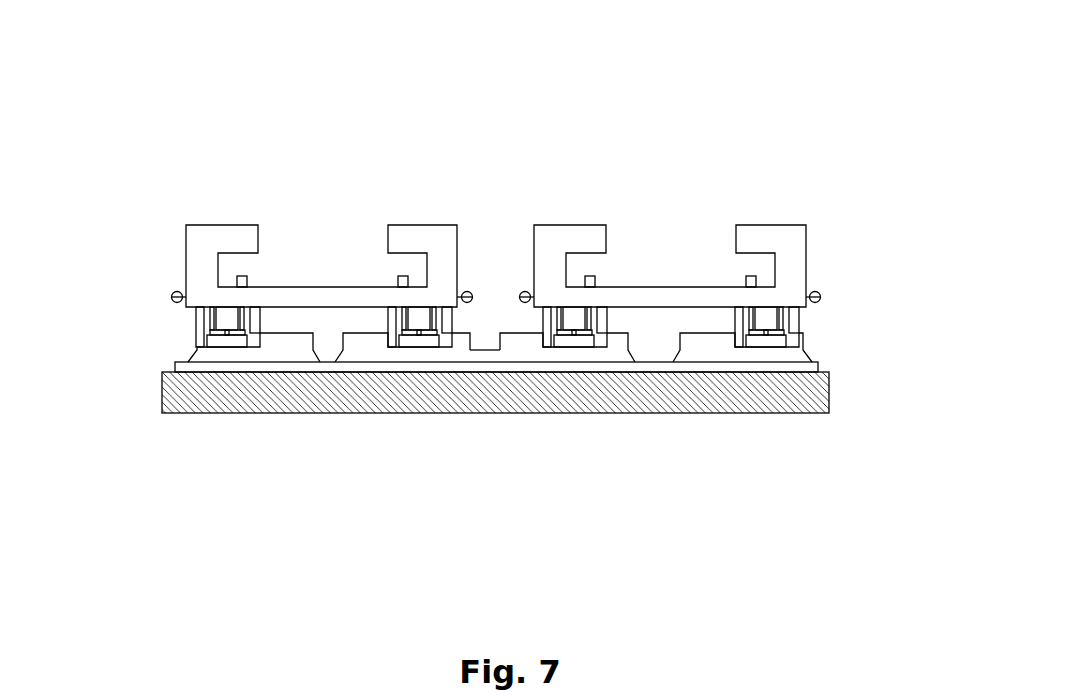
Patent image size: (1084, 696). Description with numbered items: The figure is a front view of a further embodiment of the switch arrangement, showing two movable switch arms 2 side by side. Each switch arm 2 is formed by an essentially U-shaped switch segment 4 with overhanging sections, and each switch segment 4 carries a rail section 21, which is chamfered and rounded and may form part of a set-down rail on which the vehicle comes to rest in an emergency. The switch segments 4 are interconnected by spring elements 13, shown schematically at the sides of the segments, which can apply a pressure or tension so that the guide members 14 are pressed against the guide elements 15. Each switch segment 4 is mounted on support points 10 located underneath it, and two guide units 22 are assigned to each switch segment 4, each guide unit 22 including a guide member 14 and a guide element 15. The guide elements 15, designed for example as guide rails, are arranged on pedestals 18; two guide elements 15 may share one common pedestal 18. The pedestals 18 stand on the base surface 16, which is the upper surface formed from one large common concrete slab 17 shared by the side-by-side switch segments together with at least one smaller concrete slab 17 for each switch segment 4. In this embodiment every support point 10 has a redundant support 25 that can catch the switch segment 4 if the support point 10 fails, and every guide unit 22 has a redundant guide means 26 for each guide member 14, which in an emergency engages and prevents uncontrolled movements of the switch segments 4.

The switch arm 2 is at (237, 192).
The switch segment 4 is at (553, 238).
The support point 10 is at (219, 291).
The spring element 13 is at (172, 290).
The guide member 14 is at (225, 342).
The guide element 15 is at (457, 340).
The base surface 16 is at (178, 435).
The concrete slab 17 is at (818, 367).
The pedestal 18 is at (300, 355).
The rail section 21 is at (398, 280).
The guide unit 22 is at (388, 313).
The redundant support 25 is at (257, 320).
The redundant guide means 26 is at (200, 323).